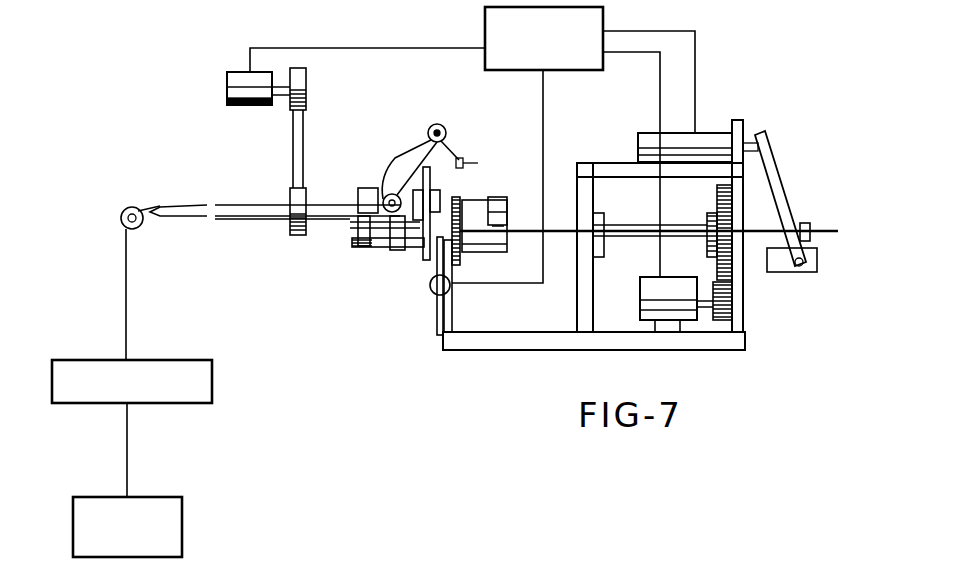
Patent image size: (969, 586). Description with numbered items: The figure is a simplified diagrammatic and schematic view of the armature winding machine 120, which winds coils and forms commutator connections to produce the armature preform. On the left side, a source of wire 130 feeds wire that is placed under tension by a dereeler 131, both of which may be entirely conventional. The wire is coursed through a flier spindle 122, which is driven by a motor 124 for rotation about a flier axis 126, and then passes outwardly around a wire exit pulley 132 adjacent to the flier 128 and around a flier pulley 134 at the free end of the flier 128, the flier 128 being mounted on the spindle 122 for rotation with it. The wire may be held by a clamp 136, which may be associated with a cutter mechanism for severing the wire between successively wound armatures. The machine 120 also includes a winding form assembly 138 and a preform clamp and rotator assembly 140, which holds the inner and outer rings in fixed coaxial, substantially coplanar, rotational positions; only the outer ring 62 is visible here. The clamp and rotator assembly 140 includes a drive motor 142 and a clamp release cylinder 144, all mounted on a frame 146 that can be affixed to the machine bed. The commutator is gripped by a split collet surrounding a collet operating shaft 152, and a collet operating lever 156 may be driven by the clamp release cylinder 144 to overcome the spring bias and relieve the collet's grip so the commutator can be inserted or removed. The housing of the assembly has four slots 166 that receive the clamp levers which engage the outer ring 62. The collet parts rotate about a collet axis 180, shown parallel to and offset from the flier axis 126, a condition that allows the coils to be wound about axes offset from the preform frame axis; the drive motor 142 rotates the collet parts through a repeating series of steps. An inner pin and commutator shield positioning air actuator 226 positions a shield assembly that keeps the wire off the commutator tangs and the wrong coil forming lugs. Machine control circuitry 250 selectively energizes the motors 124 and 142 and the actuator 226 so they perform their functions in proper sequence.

The machine control circuitry 250 is at (484, 24).
The motor 124 is at (228, 75).
The flier spindle 122 is at (308, 200).
The flier axis 126 is at (260, 205).
The dereeler 131 is at (213, 380).
The source of wire 130 is at (183, 522).
The winding machine 120 is at (334, 244).
The wire exit pulley 132 is at (378, 188).
The flier 128 is at (413, 164).
The flier pulley 134 is at (434, 123).
The clamp 136 is at (462, 155).
The outer ring 62 is at (454, 198).
The winding form assembly 138 is at (423, 257).
The slots 166 is at (491, 211).
The inner pin and commutator shield positioning air actuator 226 is at (432, 290).
The preform clamp and rotator assembly 140 is at (553, 187).
The frame 146 is at (556, 342).
The clamp release cylinder 144 is at (708, 132).
The collet axis 180 is at (614, 226).
The drive motor 142 is at (650, 292).
The collet operating lever 156 is at (780, 168).
The collet operating shaft 152 is at (766, 251).